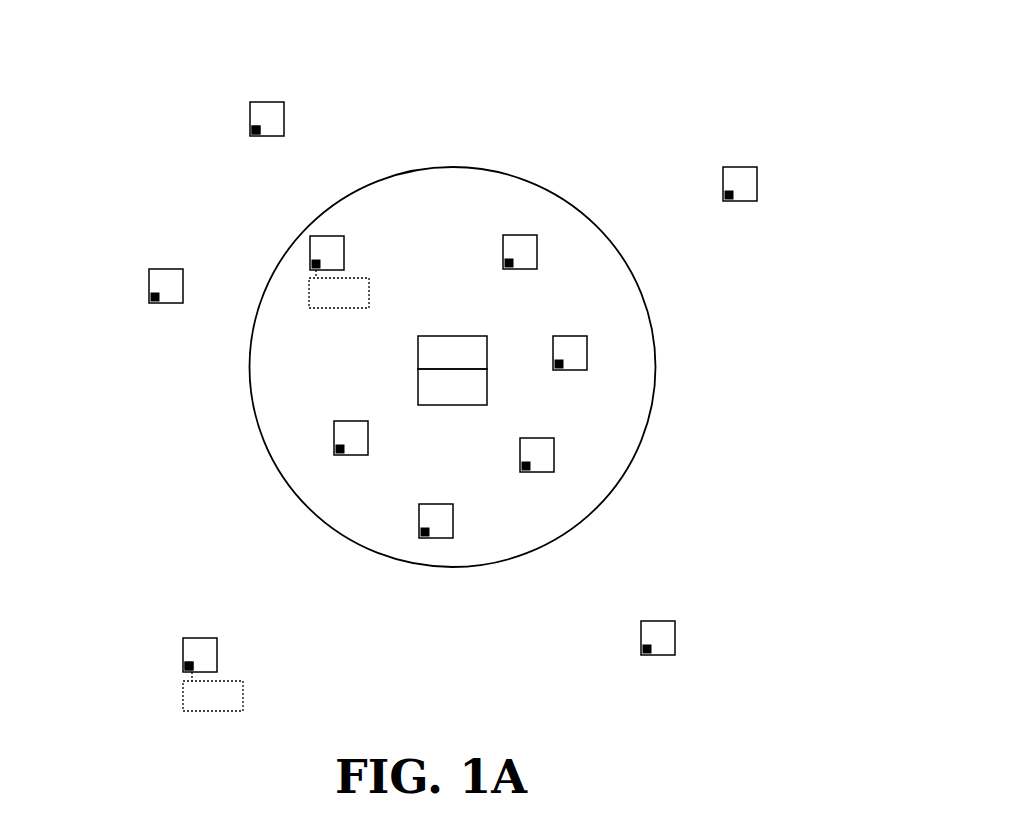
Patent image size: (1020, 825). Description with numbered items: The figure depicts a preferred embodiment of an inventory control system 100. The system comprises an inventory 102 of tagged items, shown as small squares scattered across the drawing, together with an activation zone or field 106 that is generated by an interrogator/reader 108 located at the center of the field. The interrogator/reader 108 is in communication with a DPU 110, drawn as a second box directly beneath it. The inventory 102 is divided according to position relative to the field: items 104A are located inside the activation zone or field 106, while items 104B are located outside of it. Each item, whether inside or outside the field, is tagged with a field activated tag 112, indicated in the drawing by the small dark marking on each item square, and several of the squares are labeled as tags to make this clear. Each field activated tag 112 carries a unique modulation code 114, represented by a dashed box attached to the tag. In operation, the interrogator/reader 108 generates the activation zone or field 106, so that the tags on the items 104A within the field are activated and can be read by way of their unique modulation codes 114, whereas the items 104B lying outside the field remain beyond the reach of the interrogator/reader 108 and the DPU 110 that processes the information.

The inventory control system 100 is at (467, 98).
The inventory 102 is at (678, 712).
The items located inside the activation zone 104A is at (326, 250).
The items located outside the activation zone 104B is at (266, 118).
The activation zone or field 106 is at (387, 505).
The interrogator/reader 108 is at (452, 336).
The DPU 110 is at (445, 405).
The field activated tag 112 is at (254, 127).
The modulation code 114 is at (338, 308).